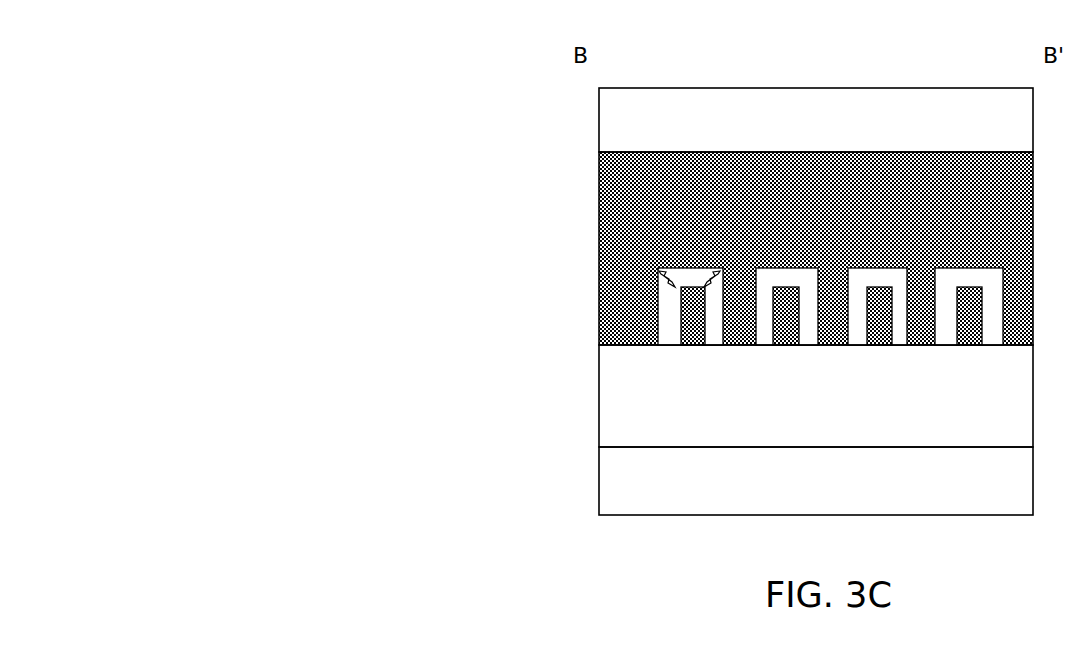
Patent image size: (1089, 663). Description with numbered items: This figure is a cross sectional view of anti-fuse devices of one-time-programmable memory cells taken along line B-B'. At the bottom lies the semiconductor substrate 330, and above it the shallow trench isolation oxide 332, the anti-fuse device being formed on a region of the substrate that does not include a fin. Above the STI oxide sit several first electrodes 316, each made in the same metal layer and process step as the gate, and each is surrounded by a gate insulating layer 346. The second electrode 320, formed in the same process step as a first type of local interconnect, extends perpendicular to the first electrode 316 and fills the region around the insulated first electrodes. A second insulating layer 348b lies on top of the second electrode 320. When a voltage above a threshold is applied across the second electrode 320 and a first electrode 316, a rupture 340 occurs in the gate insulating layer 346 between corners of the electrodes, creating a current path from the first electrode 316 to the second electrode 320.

The second insulating layer 348b is at (615, 125).
The second electrode 320 is at (618, 175).
The rupture 340 is at (642, 263).
The gate insulating layer 346 is at (670, 307).
The first electrode 316 is at (685, 333).
The shallow trench isolation (STI) oxide 332 is at (895, 410).
The semiconductor substrate 330 is at (982, 492).